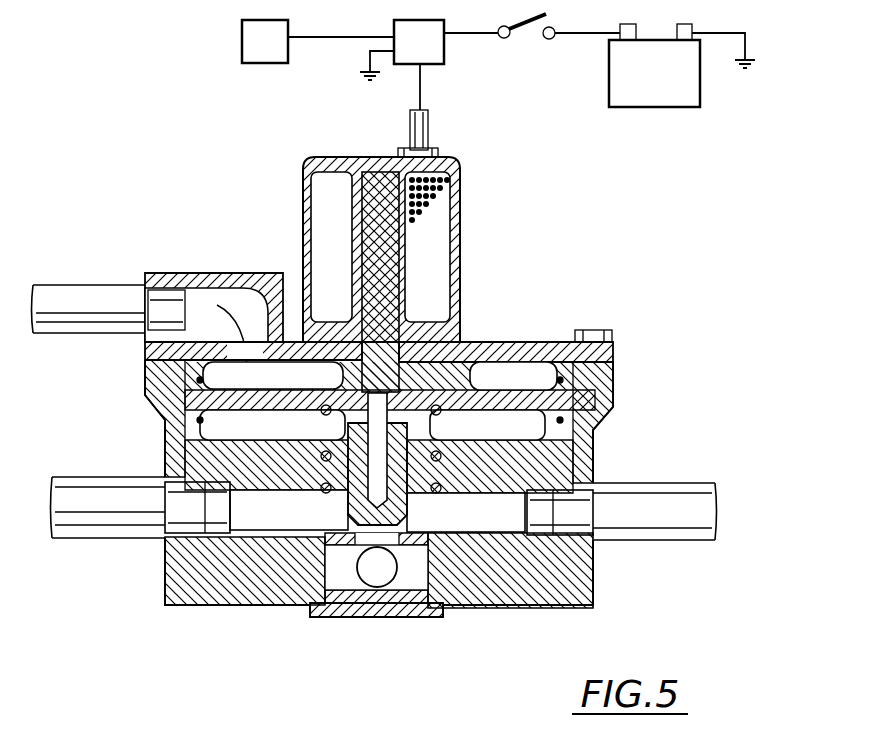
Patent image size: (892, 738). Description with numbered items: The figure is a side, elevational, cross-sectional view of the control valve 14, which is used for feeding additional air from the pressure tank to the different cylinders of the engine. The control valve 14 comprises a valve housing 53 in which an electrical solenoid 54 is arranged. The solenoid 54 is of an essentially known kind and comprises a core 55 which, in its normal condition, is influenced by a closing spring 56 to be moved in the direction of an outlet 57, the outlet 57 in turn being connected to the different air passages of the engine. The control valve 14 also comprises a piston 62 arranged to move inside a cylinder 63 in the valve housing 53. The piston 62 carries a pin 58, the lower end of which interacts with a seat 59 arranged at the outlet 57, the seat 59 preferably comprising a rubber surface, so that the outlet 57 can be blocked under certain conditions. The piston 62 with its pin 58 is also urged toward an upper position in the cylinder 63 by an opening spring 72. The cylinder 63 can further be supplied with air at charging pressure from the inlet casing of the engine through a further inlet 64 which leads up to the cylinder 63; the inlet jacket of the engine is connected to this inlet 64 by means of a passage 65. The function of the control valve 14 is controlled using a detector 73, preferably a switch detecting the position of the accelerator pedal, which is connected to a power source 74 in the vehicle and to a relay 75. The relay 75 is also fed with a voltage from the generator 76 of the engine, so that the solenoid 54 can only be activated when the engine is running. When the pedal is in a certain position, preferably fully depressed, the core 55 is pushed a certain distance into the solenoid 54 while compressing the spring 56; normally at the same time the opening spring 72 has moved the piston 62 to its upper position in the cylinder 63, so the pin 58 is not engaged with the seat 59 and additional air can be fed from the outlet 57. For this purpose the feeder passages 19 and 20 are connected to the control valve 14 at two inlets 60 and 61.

The control valve 14 is at (496, 161).
The feeder passage 19 is at (97, 487).
The feeder passage 20 is at (630, 468).
The valve housing 53 is at (537, 590).
The electrical solenoid 54 is at (447, 215).
The core 55 is at (368, 195).
The closing spring 56 is at (460, 305).
The outlet 57 is at (346, 612).
The pin 58 is at (348, 520).
The seat 59 is at (407, 548).
The inlet 60 is at (183, 520).
The inlet 61 is at (600, 527).
The piston 62 is at (470, 393).
The cylinder 63 is at (215, 365).
The inlet 64 is at (165, 300).
The passage 65 is at (72, 297).
The opening spring 72 is at (440, 432).
The detector 73 is at (523, 38).
The power source 74 is at (667, 98).
The relay 75 is at (436, 60).
The generator 76 is at (271, 56).